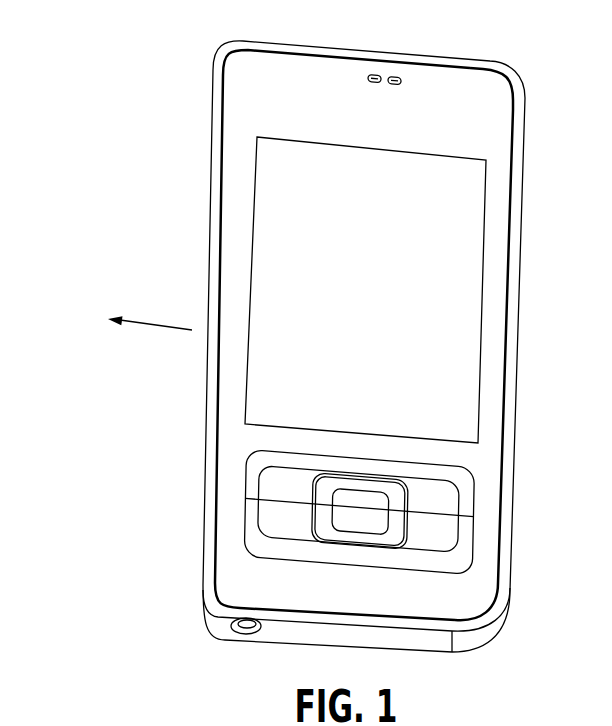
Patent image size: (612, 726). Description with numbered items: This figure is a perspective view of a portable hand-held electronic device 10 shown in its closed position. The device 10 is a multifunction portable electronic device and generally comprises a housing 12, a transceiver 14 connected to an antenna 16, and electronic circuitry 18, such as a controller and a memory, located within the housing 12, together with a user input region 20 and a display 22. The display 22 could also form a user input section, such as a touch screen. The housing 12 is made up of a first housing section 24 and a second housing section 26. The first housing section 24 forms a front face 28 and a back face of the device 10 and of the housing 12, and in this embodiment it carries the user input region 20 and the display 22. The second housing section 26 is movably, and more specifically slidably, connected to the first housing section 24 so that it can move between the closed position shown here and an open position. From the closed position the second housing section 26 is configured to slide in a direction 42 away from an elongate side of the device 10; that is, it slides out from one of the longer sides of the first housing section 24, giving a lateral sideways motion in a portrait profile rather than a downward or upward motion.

The device 10 is at (178, 66).
The housing 12 is at (241, 49).
The transceiver 14 is at (483, 128).
The antenna 16 is at (478, 97).
The electronic circuitry 18 is at (482, 458).
The user input region 20 is at (463, 498).
The display 22 is at (265, 210).
The first housing section 24 is at (510, 572).
The second housing section 26 is at (435, 653).
The front face 28 is at (231, 440).
The direction 42 is at (160, 323).